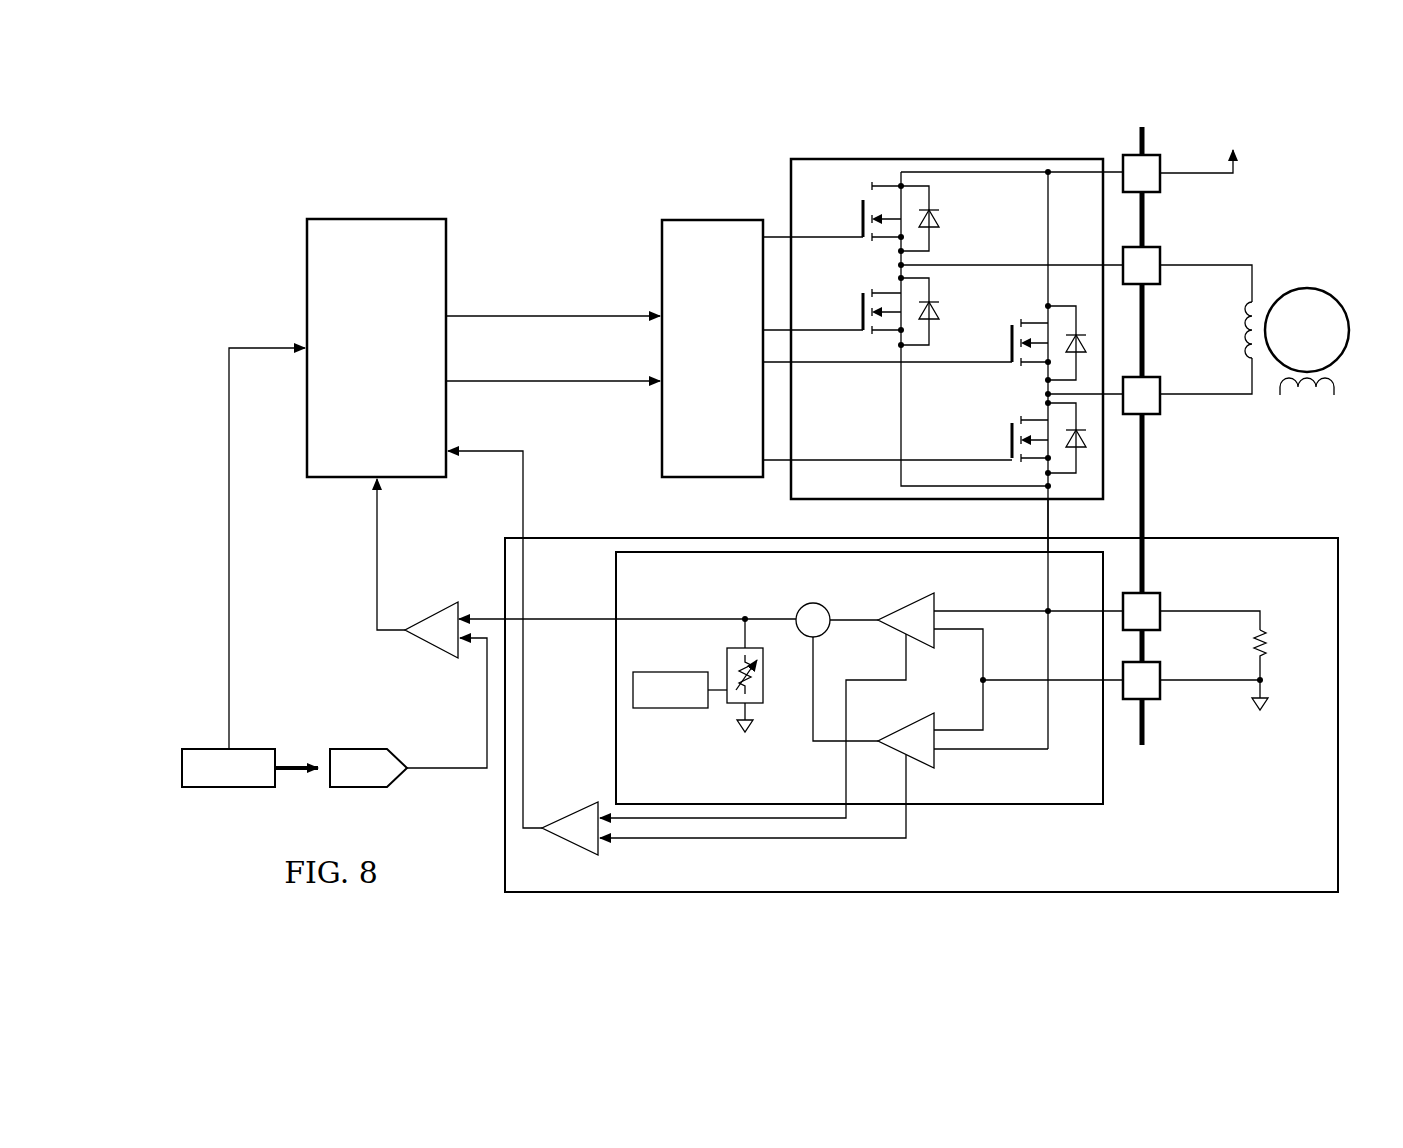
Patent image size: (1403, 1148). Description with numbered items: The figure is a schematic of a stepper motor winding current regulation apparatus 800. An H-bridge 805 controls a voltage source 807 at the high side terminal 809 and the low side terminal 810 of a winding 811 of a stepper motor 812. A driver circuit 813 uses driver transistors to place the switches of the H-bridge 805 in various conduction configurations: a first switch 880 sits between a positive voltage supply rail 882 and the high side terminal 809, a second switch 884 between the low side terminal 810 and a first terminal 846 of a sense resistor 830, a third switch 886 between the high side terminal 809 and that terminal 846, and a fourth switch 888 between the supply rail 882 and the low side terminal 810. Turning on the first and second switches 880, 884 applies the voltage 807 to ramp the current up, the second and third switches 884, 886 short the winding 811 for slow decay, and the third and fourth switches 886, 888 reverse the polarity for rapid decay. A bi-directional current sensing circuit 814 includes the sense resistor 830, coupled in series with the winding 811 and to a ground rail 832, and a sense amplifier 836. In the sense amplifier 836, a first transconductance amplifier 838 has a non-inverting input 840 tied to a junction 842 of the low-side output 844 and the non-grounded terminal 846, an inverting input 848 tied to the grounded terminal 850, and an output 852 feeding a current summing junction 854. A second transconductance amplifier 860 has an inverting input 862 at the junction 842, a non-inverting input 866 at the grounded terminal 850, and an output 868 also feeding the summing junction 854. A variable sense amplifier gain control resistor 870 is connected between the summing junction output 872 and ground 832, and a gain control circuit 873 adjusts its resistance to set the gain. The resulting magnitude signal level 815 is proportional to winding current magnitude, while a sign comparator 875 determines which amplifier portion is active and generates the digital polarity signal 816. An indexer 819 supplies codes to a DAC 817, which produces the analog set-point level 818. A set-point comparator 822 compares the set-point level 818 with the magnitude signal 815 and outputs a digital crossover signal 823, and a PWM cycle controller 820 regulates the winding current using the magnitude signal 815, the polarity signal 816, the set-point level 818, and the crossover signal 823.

The stepper motor winding current regulation apparatus 800 is at (243, 181).
The H-bridge 805 is at (789, 176).
The voltage source 807 is at (1250, 133).
The high side terminal 809 is at (1232, 263).
The low side terminal 810 is at (1232, 396).
The winding 811 is at (1240, 322).
The stepper motor 812 is at (1309, 287).
The driver circuit 813 is at (712, 348).
The bi-directional current sensing circuit 814 is at (595, 536).
The IS_MAG 815 is at (569, 593).
The IS_SIGN 816 is at (530, 437).
The DAC 817 is at (359, 790).
The VTRIP 818 is at (445, 746).
The indexer 819 is at (221, 790).
The PWM cycle controller 820 is at (376, 348).
The set-point comparator 822 is at (428, 648).
The X_OVER 823 is at (305, 558).
The sense resistor 830 is at (1250, 643).
The ground rail 832 is at (1268, 704).
The sense amplifier 836 is at (1031, 806).
The first transconductance amplifier 838 is at (892, 634).
The non-inverting input 840 is at (939, 609).
The junction 842 is at (1054, 614).
The low-side output 844 is at (1050, 517).
The non-grounded terminal 846 is at (1248, 609).
The inverting input 848 is at (940, 633).
The grounded terminal 850 is at (1204, 684).
The output 852 is at (852, 618).
The current summing junction 854 is at (805, 604).
The second transconductance amplifier 860 is at (892, 754).
The inverting input 862 is at (941, 753).
The non-inverting input 866 is at (940, 728).
The output 868 is at (829, 745).
The variable sense amplifier gain control resistor 870 is at (725, 656).
The output 872 is at (763, 617).
The gain control circuit 873 is at (672, 710).
The sign comparator 875 is at (565, 846).
The first switch 880 is at (860, 207).
The positive voltage supply rail 882 is at (1182, 176).
The second switch 884 is at (1008, 428).
The third switch 886 is at (860, 301).
The fourth switch 888 is at (1008, 331).